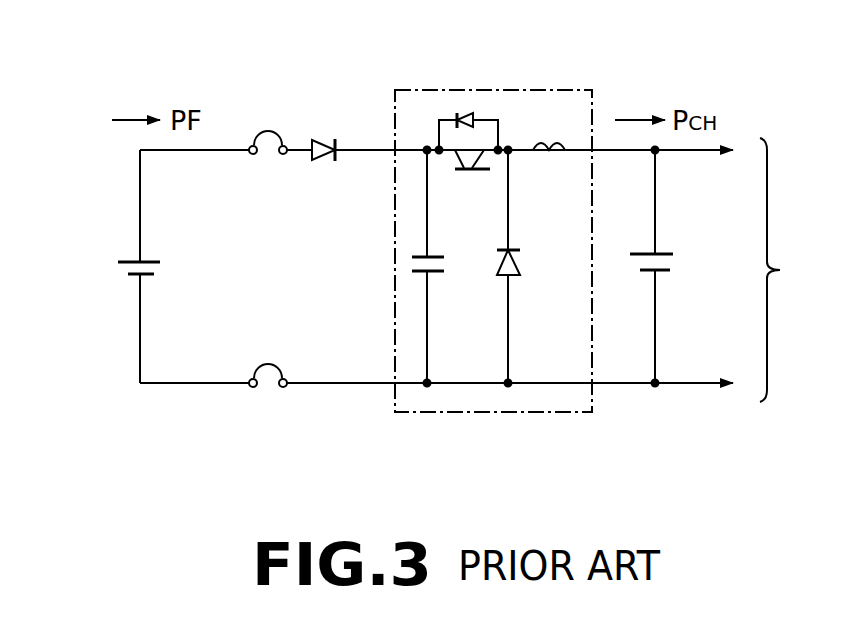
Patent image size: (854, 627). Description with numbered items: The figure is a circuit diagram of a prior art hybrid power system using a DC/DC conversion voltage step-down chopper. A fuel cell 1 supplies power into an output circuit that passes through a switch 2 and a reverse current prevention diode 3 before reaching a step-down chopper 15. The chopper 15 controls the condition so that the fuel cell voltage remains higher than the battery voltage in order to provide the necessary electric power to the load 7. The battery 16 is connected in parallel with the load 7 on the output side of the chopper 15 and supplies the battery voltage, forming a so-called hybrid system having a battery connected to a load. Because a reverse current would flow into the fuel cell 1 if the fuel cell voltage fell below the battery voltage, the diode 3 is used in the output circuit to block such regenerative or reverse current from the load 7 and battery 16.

The fuel cell 1 is at (155, 267).
The switch 2 is at (267, 132).
The reverse current prevention diode 3 is at (322, 130).
The load 7 is at (781, 270).
The step-down chopper 15 is at (561, 90).
The battery 16 is at (667, 262).